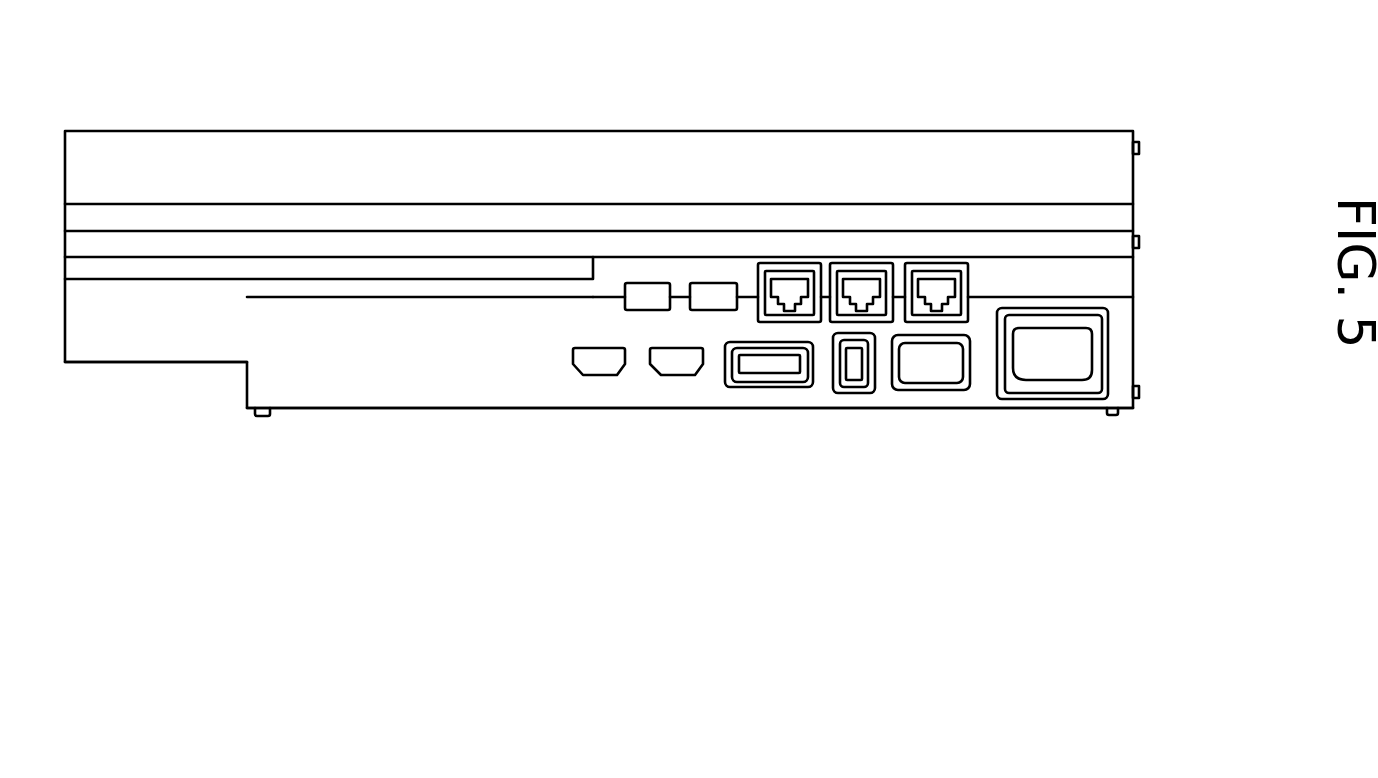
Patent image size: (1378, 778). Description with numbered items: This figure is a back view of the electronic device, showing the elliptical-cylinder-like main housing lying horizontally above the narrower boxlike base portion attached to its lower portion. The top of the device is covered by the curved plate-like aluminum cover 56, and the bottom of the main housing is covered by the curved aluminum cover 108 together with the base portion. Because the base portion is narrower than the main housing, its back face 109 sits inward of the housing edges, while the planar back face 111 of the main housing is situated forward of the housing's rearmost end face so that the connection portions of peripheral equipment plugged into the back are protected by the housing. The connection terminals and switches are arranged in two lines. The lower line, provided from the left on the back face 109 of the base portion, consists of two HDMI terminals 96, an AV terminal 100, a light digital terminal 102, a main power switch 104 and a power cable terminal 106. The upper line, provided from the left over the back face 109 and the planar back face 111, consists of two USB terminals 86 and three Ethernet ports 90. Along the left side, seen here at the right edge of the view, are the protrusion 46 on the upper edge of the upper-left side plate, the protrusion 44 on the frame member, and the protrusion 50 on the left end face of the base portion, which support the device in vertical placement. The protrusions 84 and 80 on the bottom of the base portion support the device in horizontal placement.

The aluminum cover 56 is at (382, 153).
The protrusion 46 is at (1140, 148).
The protrusion 44 is at (1140, 242).
The planar back face 111 is at (1093, 281).
The protrusion 50 is at (1140, 392).
The aluminum cover 108 is at (121, 335).
The protrusion 84 is at (263, 418).
The back face 109 is at (456, 390).
The USB terminals 86 is at (718, 283).
The Ethernet ports 90 is at (938, 263).
The HDMI terminals 96 is at (672, 376).
The AV terminal 100 is at (770, 388).
The light digital terminal 102 is at (852, 394).
The main power switch 104 is at (928, 391).
The power cable terminal 106 is at (1040, 400).
The protrusion 80 is at (1110, 418).